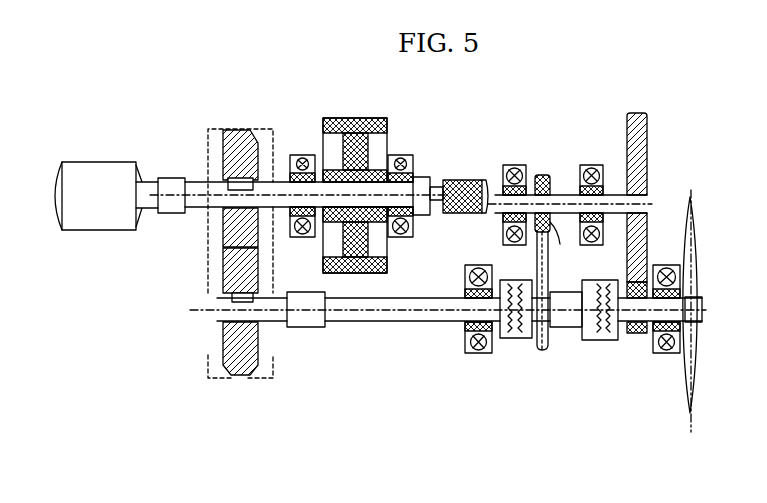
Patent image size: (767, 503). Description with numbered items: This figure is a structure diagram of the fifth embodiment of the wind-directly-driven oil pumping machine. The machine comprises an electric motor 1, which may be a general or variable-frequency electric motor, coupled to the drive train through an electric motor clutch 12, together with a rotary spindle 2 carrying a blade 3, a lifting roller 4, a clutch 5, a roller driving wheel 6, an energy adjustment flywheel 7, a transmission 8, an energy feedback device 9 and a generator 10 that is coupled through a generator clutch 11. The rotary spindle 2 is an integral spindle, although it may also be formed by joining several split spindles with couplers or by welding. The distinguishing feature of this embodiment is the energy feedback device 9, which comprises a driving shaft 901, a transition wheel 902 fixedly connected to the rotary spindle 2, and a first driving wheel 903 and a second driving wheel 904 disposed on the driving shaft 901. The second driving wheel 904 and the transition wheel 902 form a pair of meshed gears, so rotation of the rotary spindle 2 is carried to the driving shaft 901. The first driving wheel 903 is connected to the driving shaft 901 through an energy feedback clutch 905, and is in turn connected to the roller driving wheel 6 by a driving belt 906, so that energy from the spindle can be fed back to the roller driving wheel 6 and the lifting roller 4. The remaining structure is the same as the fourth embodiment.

The electric motor 1 is at (463, 182).
The rotary spindle 2 is at (344, 321).
The blade 3 is at (701, 234).
The lifting roller 4 is at (569, 331).
The clutch 5 is at (507, 340).
The roller driving wheel 6 is at (542, 352).
The energy adjustment flywheel 7 is at (363, 118).
The transmission 8 is at (213, 142).
The energy feedback device 9 is at (598, 148).
The generator 10 is at (90, 173).
The generator clutch 11 is at (177, 178).
The electric motor clutch 12 is at (418, 177).
The driving shaft 901 is at (562, 197).
The transition wheel 902 is at (638, 333).
The first driving wheel 903 is at (541, 175).
The second driving wheel 904 is at (637, 113).
The energy feedback clutch 905 is at (552, 234).
The driving belt 906 is at (535, 248).